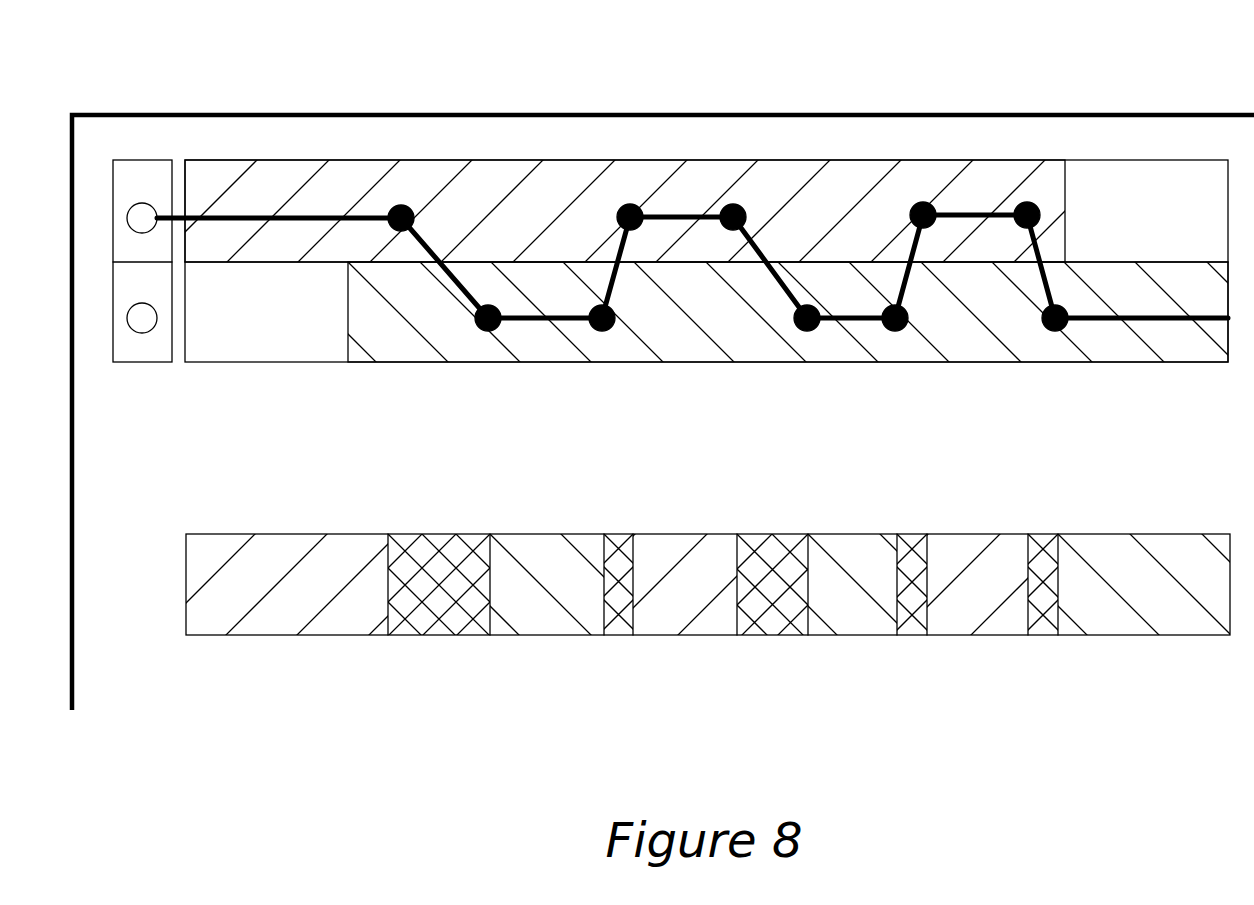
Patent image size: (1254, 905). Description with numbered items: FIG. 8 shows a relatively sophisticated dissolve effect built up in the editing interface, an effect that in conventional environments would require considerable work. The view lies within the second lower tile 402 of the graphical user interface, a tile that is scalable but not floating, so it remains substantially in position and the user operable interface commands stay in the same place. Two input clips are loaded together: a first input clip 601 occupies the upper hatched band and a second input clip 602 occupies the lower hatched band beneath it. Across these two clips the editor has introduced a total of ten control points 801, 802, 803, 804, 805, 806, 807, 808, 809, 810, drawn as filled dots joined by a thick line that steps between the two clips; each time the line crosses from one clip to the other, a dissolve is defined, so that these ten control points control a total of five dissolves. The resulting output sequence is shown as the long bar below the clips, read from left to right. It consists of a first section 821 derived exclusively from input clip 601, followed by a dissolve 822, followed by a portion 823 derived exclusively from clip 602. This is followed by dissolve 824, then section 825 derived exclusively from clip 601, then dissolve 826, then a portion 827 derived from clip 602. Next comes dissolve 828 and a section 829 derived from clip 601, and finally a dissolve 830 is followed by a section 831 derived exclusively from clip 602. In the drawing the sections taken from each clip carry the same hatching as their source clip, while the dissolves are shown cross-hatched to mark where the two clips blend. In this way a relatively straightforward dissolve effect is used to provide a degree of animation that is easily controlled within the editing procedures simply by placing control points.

The second lower tile 402 is at (1155, 145).
The first input clip 601 is at (527, 190).
The second input clip 602 is at (560, 345).
The control point 801 is at (400, 230).
The control point 802 is at (488, 332).
The control point 803 is at (598, 332).
The control point 804 is at (637, 204).
The control point 805 is at (736, 204).
The control point 806 is at (804, 332).
The control point 807 is at (890, 332).
The control point 808 is at (921, 202).
The control point 809 is at (1027, 202).
The control point 810 is at (1058, 332).
The first section 821 is at (310, 606).
The dissolve 822 is at (462, 606).
The portion 823 is at (553, 606).
The dissolve 824 is at (620, 606).
The section 825 is at (703, 606).
The dissolve 826 is at (773, 606).
The portion 827 is at (847, 606).
The dissolve 828 is at (913, 606).
The section 829 is at (980, 606).
The dissolve 830 is at (1037, 606).
The section 831 is at (1130, 608).